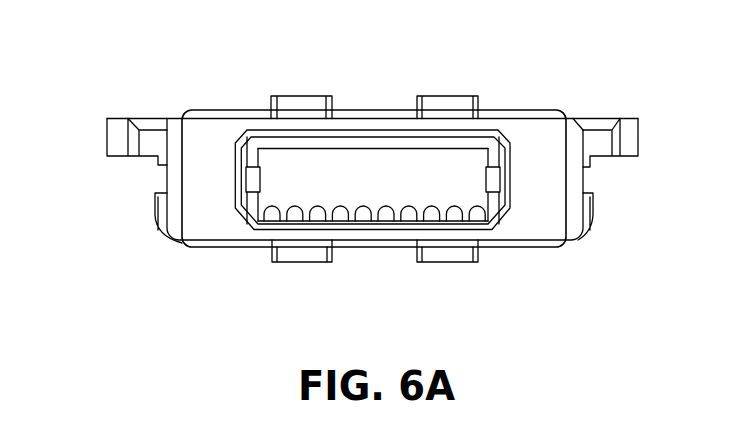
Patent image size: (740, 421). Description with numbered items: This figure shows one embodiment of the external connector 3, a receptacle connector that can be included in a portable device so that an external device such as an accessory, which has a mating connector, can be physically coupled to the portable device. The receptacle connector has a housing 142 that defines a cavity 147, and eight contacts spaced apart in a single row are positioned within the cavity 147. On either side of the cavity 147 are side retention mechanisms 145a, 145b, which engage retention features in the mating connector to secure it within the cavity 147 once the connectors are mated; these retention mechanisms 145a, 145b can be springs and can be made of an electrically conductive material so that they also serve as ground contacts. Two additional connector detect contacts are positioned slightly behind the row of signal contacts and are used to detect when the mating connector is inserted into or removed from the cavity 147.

The external connector 3 is at (70, 121).
The housing 142 is at (210, 212).
The side retention mechanism 145a is at (255, 182).
The side retention mechanism 145b is at (495, 180).
The cavity 147 is at (358, 162).